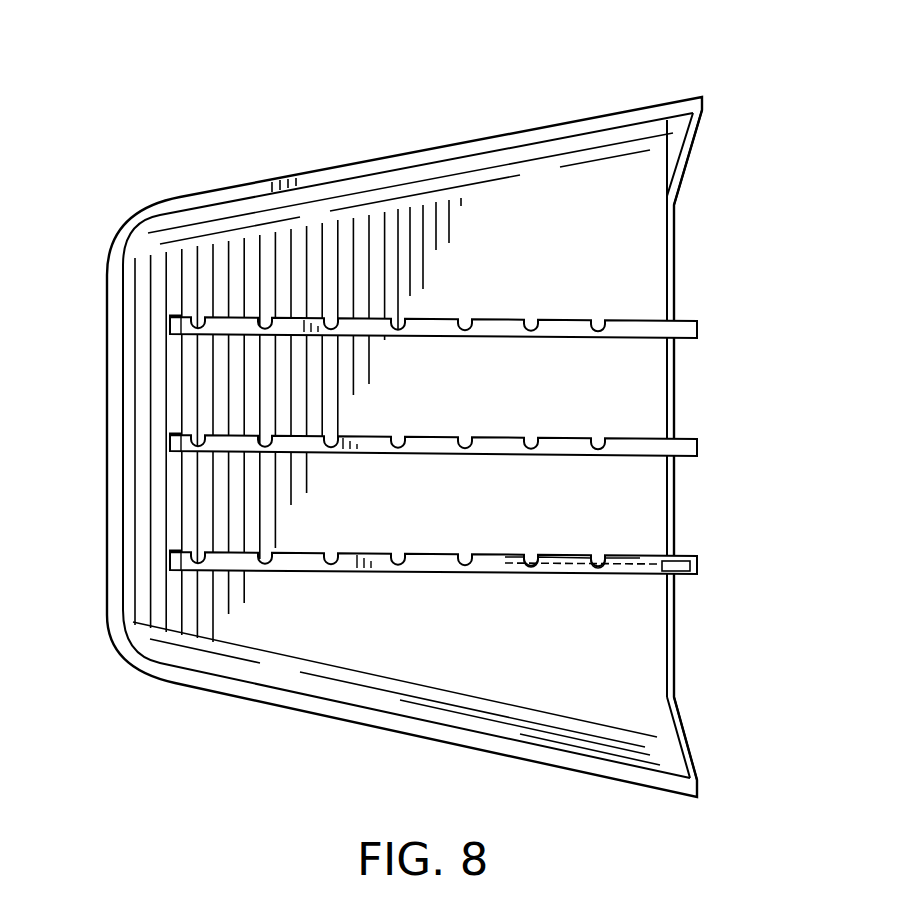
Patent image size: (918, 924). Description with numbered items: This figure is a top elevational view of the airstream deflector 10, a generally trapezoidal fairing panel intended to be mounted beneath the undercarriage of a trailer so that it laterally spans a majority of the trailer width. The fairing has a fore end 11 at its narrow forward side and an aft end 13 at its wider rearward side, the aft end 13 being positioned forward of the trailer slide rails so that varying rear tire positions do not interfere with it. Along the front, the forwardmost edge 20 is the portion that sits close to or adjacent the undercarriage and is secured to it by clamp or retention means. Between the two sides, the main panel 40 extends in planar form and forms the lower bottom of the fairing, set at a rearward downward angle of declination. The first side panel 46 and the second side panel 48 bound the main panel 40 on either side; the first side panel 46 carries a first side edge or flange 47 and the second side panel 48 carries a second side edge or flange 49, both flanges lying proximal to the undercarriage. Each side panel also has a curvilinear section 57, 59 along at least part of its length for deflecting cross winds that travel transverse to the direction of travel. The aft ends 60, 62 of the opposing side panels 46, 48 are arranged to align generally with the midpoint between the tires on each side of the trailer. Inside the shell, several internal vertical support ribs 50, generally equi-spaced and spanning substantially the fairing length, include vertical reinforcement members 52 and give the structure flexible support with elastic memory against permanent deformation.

The airstream deflector 10 is at (212, 110).
The fore end 11 is at (106, 508).
The aft end 13 is at (687, 222).
The forwardmost edge 20 is at (107, 365).
The main panel 40 is at (613, 280).
The first side panel 46 is at (520, 735).
The first side edge or flange 47 is at (455, 740).
The second side panel 48 is at (498, 157).
The second side edge or flange 49 is at (375, 162).
The internal vertical support ribs 50 is at (699, 331).
The vertical reinforcement members 52 is at (595, 575).
The curvilinear section 57 is at (374, 690).
The curvilinear section 59 is at (435, 183).
The aft end of first side panel 60 is at (697, 797).
The aft end of second side panel 62 is at (702, 100).